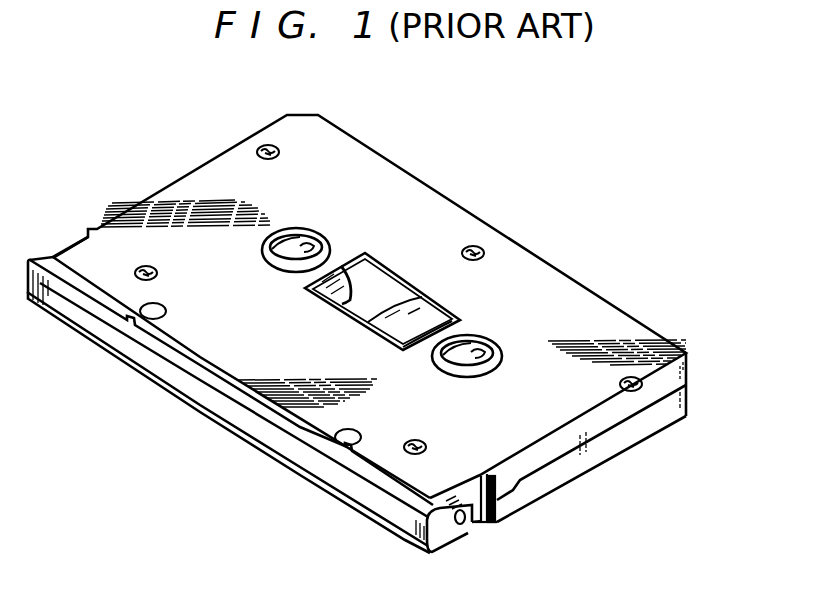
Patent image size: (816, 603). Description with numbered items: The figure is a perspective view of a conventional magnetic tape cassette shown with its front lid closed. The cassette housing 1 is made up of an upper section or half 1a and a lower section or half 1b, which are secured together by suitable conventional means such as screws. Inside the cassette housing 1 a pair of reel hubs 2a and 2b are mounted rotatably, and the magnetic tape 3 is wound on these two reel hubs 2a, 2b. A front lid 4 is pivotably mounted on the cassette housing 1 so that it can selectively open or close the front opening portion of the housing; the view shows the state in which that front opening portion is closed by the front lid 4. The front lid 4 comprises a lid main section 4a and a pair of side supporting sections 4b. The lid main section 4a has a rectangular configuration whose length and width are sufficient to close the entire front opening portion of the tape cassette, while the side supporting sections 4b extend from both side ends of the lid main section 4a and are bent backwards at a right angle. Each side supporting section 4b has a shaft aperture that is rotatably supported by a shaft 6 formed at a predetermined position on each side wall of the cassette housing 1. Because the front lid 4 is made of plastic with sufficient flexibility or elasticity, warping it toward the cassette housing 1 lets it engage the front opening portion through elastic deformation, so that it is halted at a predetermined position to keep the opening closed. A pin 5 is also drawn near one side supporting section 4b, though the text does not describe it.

The cassette housing 1 is at (700, 487).
The upper section or half 1a is at (632, 417).
The lower section or half 1b is at (670, 417).
The reel hub 2a is at (323, 238).
The reel hub 2b is at (494, 346).
The magnetic tape 3 is at (395, 300).
The front lid 4 is at (202, 393).
The lid main section 4a is at (310, 460).
The side supporting section 4b is at (56, 256).
The pin 5 is at (466, 521).
The shaft 6 is at (499, 512).